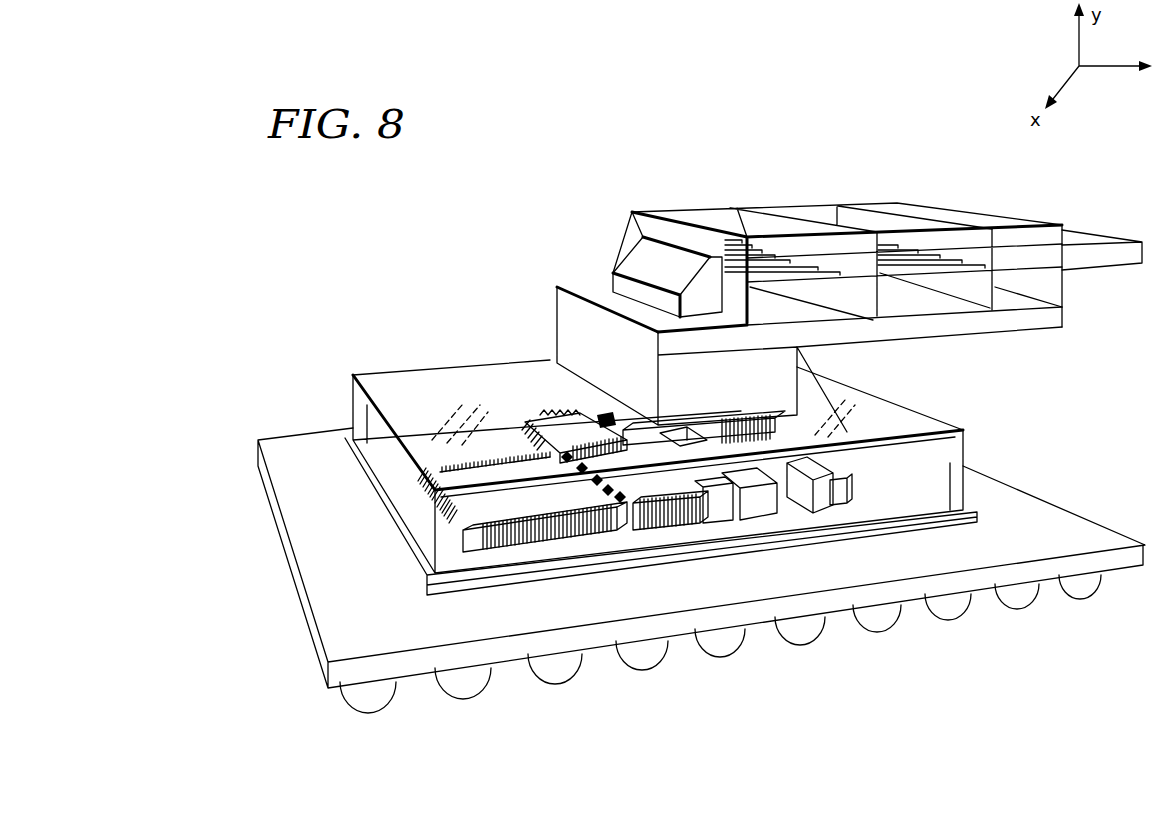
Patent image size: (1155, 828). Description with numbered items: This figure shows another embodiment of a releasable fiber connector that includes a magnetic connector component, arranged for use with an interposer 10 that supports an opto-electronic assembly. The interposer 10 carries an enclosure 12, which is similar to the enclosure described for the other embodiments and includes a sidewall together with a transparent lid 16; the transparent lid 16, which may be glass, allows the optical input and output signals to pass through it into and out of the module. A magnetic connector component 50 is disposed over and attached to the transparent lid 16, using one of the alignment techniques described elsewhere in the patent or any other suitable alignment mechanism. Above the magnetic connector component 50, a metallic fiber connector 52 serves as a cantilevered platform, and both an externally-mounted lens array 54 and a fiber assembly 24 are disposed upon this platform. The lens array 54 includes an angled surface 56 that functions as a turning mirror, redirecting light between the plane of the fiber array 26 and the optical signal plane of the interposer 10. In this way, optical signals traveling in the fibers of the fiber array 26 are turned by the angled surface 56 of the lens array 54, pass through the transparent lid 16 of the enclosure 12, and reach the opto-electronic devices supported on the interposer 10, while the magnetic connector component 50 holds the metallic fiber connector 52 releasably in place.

The interposer 10 is at (978, 513).
The enclosure 12 is at (352, 422).
The transparent lid 16 is at (428, 378).
The fiber assembly 24 is at (736, 262).
The fiber array 26 is at (1077, 237).
The magnetic connector component 50 is at (567, 333).
The metallic fiber connector 52 is at (998, 320).
The lens array 54 is at (633, 217).
The angled surface 56 is at (637, 262).